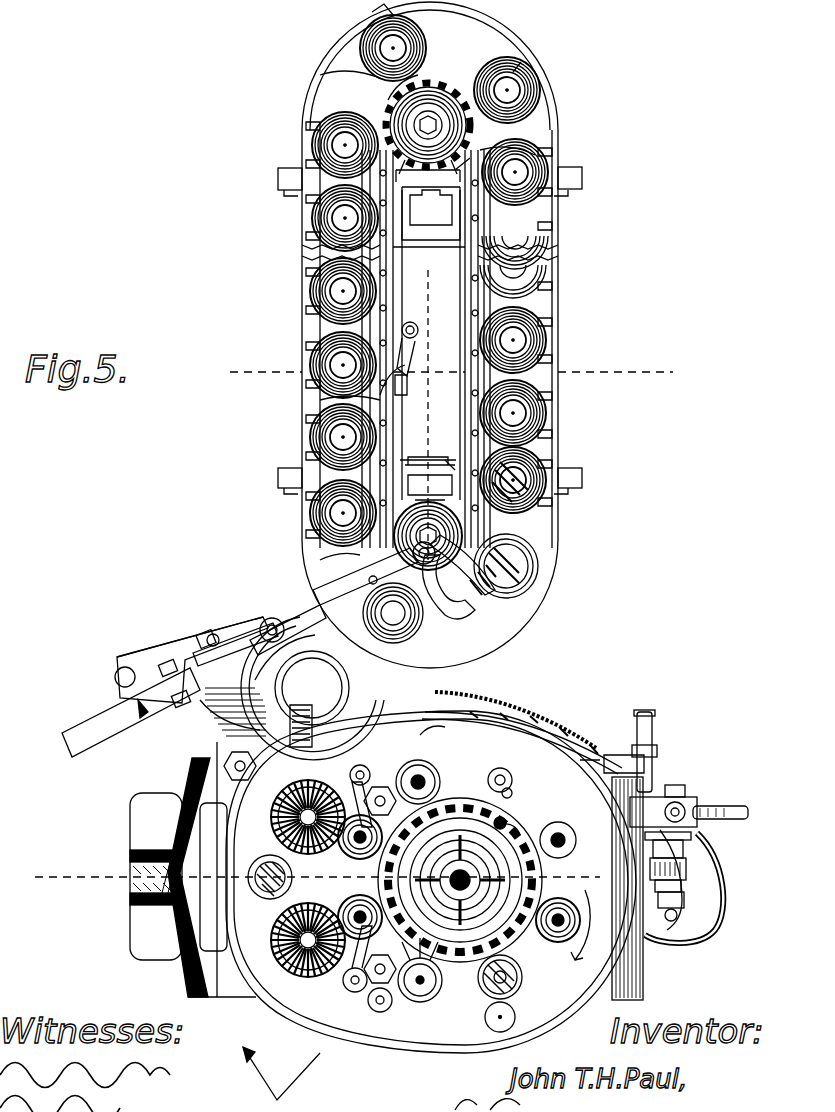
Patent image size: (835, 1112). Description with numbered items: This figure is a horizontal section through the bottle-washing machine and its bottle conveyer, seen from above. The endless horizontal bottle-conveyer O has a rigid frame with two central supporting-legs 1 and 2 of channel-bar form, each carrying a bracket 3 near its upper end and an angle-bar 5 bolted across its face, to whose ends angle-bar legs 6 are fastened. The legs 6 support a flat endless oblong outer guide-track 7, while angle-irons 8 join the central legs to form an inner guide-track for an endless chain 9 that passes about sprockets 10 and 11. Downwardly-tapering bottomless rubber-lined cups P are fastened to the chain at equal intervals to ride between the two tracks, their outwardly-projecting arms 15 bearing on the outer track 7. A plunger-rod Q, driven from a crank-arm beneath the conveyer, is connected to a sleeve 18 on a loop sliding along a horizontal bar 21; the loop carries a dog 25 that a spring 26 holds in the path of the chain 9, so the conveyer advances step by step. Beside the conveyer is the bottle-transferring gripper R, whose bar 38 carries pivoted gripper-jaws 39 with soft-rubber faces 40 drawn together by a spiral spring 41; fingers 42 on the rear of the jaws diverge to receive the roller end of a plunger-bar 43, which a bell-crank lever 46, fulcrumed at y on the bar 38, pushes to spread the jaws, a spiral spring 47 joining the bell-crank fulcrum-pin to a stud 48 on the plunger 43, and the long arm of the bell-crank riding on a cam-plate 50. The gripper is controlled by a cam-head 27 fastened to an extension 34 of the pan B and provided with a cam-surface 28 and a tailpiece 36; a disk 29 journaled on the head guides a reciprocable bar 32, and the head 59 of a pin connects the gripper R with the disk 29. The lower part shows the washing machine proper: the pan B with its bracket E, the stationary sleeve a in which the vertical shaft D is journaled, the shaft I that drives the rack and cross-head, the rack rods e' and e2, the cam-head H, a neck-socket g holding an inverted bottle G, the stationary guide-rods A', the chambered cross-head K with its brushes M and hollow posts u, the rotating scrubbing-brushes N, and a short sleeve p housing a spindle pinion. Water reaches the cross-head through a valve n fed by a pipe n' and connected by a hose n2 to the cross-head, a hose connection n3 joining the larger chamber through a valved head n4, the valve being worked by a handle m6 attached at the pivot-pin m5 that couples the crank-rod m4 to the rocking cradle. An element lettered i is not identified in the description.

The endless horizontal bottle-conveyer O is at (397, 335).
The angle-irons 8 is at (463, 232).
The central supporting-leg 2 is at (427, 190).
The angle-bar legs 6 is at (300, 182).
The angle-bar 5 is at (290, 172).
The outer guide-track 7 is at (330, 62).
The outwardly-projecting arms 15 is at (392, 13).
The cups P is at (388, 88).
The short sleeve p is at (520, 135).
The sprocket 11 is at (447, 100).
The endless chain 9 is at (387, 100).
The bracket 3 is at (463, 167).
The central supporting-leg 1 is at (430, 467).
The sleeve 18 is at (458, 292).
The horizontal bar 21 is at (654, 334).
The spring 26 is at (400, 368).
The dog 25 is at (407, 378).
The sprocket 10 is at (443, 537).
The gripper-jaws 39 is at (520, 570).
The spiral spring 41 is at (513, 617).
The faces 40 is at (477, 653).
The extension of the pan 34 is at (517, 694).
The cam-head 27 is at (417, 733).
The fingers 42 is at (327, 530).
The plunger-rod Q is at (340, 563).
The plunger-bar 43 is at (330, 565).
The spiral spring 47 is at (213, 637).
The stud 48 is at (275, 620).
The bell-crank lever 46 is at (211, 637).
The fulcrum y is at (262, 623).
The bottle-transferring gripper R is at (185, 640).
The bar 38 is at (84, 732).
The cam-plate 50 is at (143, 708).
The tailpiece 36 is at (207, 707).
The disk 29 is at (312, 688).
The head of pin 59 is at (291, 658).
The cam-surface 28 is at (312, 688).
The reciprocable bar 32 is at (252, 762).
The bracket E is at (143, 827).
The vertical shaft I is at (245, 863).
The surface-scrubbing brushes N is at (272, 830).
The brush M is at (423, 1070).
The bottle G is at (537, 987).
The cam-head H is at (540, 873).
The vertical rods e' is at (435, 781).
The guide-rods A' is at (369, 917).
The lower annular socket g is at (490, 780).
The pin i is at (512, 790).
The rods e2 is at (503, 822).
The stationary sleeve a is at (503, 963).
The vertical shaft D is at (437, 995).
The hollow posts u is at (350, 987).
The cross-head K is at (281, 1077).
The pan B is at (597, 947).
The pipe n' is at (669, 746).
The valve n is at (663, 786).
The valved head n4 is at (695, 803).
The hose n2 is at (700, 802).
The valve handle m6 is at (697, 840).
The crank-rod m4 is at (690, 865).
The hose connection n3 is at (700, 900).
The pivot-pin m5 is at (700, 950).